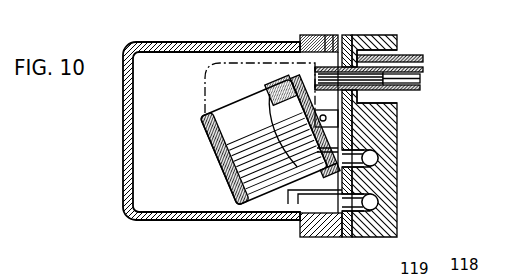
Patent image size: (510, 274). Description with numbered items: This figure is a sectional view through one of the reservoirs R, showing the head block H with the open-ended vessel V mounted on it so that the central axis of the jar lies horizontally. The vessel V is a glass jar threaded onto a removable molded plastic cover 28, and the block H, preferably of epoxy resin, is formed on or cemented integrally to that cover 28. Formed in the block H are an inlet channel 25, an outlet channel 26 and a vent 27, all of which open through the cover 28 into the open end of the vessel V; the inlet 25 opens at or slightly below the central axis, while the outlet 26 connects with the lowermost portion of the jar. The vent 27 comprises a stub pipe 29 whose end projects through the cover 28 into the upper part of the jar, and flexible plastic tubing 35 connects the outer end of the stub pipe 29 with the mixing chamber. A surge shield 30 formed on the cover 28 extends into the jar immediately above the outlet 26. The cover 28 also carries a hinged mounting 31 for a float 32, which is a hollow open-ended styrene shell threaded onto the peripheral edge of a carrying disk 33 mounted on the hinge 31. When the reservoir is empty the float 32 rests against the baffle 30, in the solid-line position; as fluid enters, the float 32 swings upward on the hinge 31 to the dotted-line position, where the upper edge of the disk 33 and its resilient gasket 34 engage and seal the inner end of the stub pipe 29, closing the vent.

The inlet channel 25 is at (379, 158).
The outlet channel 26 is at (379, 201).
The vent 27 is at (423, 76).
The removable cover 28 is at (329, 228).
The stub pipe 29 is at (324, 50).
The surge shield 30 is at (299, 196).
The hinged mounting 31 is at (292, 145).
The float 32 is at (198, 128).
The carrying disk 33 is at (275, 110).
The resilient gasket 34 is at (293, 77).
The flexible plastic tubing 35 is at (413, 58).
The block H is at (383, 115).
The reservoir R is at (105, 142).
The vessel V is at (177, 223).